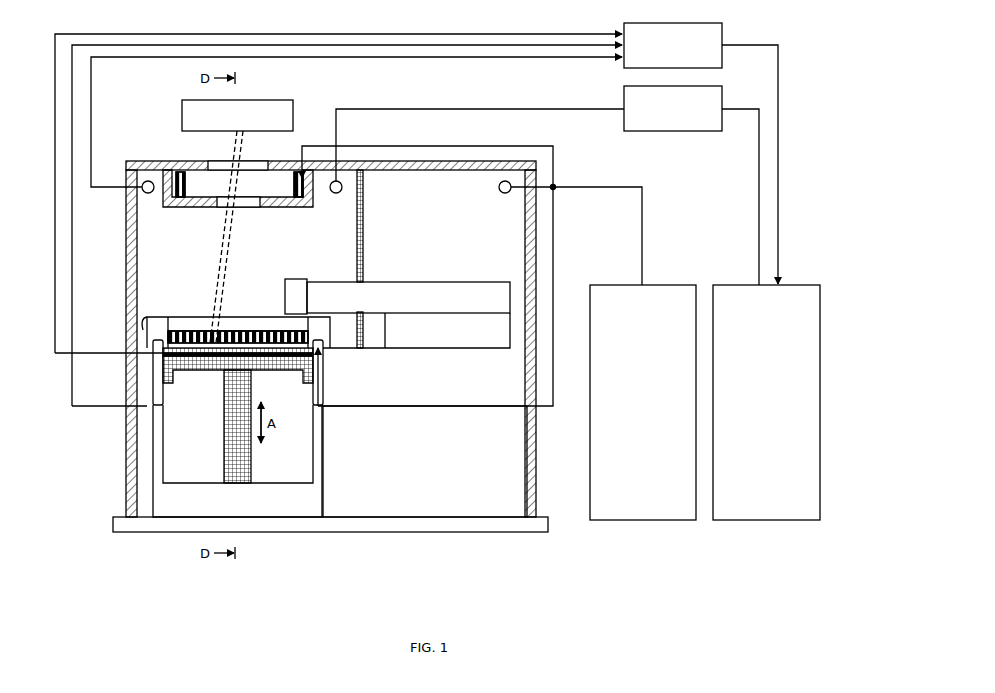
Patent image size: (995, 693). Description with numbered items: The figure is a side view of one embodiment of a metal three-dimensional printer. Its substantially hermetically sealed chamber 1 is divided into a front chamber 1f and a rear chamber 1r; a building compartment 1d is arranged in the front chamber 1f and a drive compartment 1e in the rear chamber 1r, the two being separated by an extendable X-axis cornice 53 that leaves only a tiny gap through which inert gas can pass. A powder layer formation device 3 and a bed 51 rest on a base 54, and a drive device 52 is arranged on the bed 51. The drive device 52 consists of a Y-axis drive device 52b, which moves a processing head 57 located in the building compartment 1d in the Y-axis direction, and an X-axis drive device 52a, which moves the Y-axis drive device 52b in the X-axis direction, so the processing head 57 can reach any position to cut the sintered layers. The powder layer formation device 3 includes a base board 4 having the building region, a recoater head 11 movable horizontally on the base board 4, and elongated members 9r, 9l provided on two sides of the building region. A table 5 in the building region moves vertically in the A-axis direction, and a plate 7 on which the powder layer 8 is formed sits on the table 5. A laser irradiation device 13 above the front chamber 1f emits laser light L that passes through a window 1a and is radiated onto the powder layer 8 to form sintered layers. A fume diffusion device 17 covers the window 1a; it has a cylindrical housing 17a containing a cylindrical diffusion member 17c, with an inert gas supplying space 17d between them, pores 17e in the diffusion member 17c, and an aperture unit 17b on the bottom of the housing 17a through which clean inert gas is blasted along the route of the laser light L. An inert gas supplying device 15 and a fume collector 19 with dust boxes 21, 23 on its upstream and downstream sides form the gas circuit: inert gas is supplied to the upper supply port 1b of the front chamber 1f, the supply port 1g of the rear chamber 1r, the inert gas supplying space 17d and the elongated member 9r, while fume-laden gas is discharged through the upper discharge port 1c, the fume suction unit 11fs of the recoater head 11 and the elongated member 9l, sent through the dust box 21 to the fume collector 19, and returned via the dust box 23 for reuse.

The chamber 1 is at (329, 308).
The window 1a is at (214, 160).
The upper supply port 1b is at (337, 194).
The upper discharge port 1c is at (148, 194).
The building compartment 1d is at (291, 242).
The drive compartment 1e is at (435, 235).
The front chamber 1f is at (150, 160).
The supply port 1g is at (499, 191).
The rear chamber 1r is at (506, 160).
The powder layer formation device 3 is at (176, 310).
The base board 4 is at (143, 330).
The table 5 is at (316, 360).
The plate 7 is at (322, 356).
The powder layer 8 is at (318, 349).
The elongated member 9l is at (158, 340).
The elongated member 9r is at (323, 334).
The recoater head 11 is at (212, 306).
The fume suction unit 11fs is at (237, 330).
The laser irradiation device 13 is at (270, 100).
The inert gas supplying device 15 is at (660, 285).
The fume diffusion device 17 is at (238, 192).
The housing 17a is at (172, 200).
The aperture unit 17b is at (247, 208).
The diffusion member 17c is at (292, 184).
The inert gas supplying space 17d is at (303, 202).
The pores 17e is at (296, 175).
The fume collector 19 is at (794, 285).
The dust box 21 is at (682, 24).
The dust box 23 is at (682, 87).
The bed 51 is at (425, 461).
The drive device 52 is at (397, 302).
The X-axis drive device 52a is at (420, 343).
The Y-axis drive device 52b is at (421, 282).
The X-axis cornice 53 is at (364, 182).
The base 54 is at (478, 526).
The processing head 57 is at (298, 279).
The laser light L is at (227, 258).